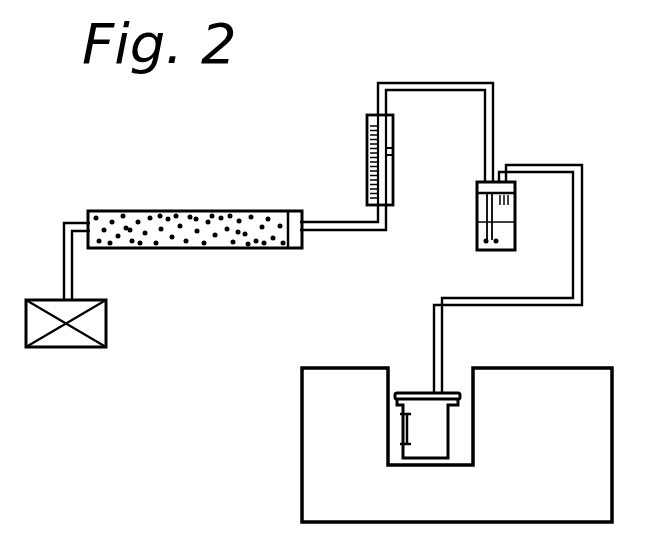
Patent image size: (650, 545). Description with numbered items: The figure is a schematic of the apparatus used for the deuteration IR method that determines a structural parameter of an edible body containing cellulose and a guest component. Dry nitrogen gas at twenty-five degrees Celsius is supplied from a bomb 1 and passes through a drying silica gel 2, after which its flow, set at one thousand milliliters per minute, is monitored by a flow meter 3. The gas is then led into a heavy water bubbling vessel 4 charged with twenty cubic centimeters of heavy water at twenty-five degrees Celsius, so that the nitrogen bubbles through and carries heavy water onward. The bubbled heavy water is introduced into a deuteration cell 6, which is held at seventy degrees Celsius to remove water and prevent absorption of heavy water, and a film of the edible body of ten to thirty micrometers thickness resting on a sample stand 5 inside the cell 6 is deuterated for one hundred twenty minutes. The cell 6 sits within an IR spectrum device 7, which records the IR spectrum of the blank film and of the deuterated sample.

The bomb 1 is at (106, 321).
The drying silica gel 2 is at (206, 209).
The flow meter 3 is at (393, 165).
The heavy water bubbling vessel 4 is at (515, 205).
The sample stand 5 is at (411, 428).
The deuteration cell 6 is at (448, 443).
The IR spectrum device 7 is at (302, 392).